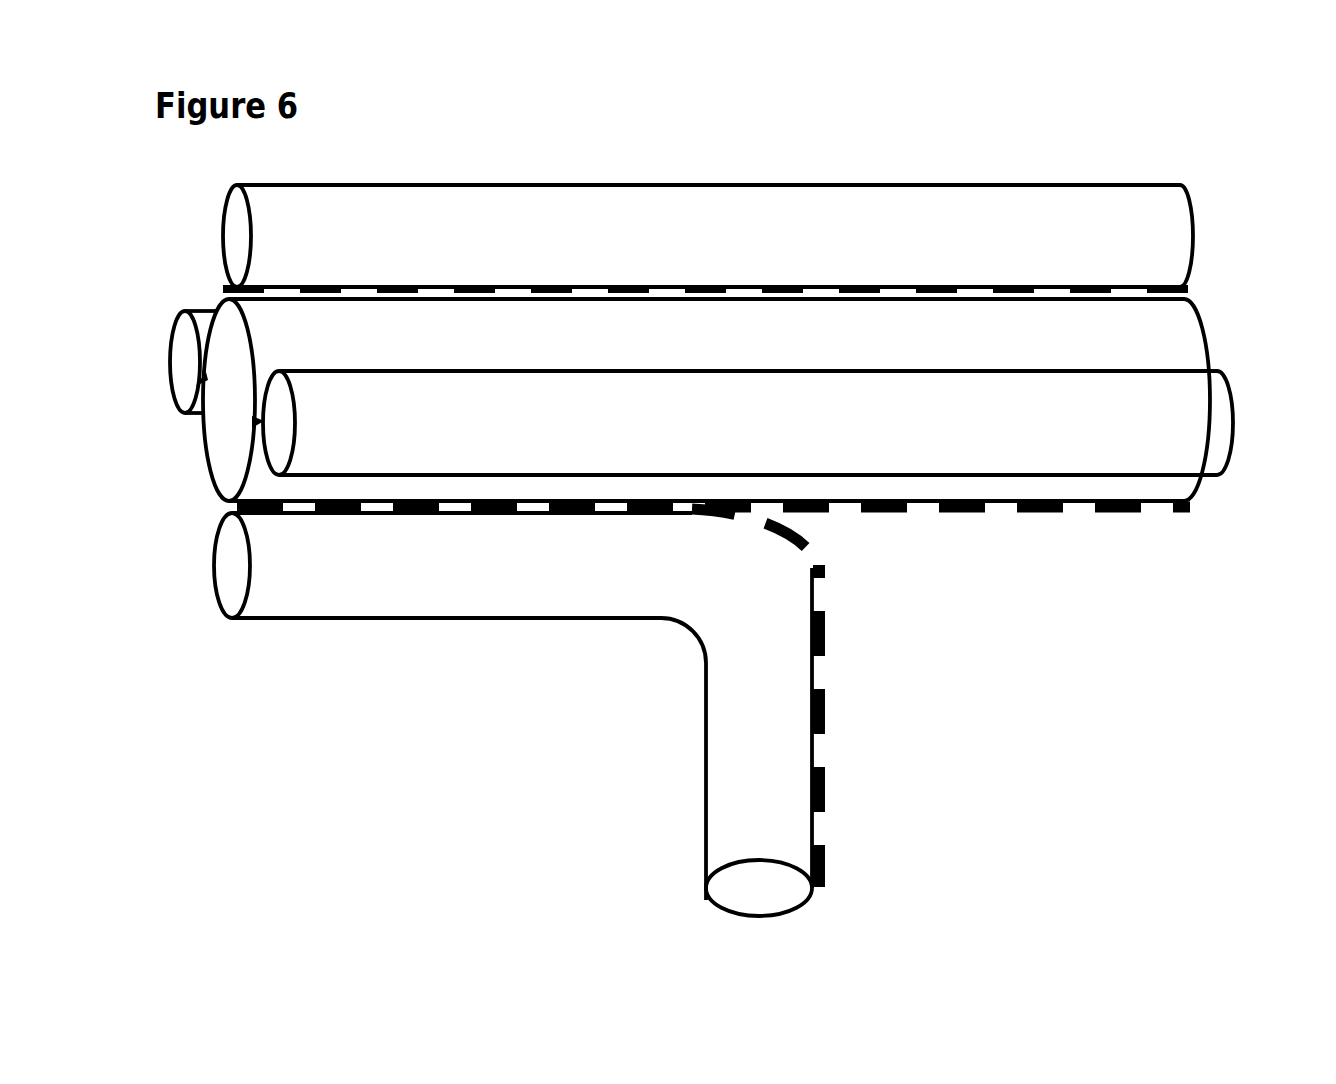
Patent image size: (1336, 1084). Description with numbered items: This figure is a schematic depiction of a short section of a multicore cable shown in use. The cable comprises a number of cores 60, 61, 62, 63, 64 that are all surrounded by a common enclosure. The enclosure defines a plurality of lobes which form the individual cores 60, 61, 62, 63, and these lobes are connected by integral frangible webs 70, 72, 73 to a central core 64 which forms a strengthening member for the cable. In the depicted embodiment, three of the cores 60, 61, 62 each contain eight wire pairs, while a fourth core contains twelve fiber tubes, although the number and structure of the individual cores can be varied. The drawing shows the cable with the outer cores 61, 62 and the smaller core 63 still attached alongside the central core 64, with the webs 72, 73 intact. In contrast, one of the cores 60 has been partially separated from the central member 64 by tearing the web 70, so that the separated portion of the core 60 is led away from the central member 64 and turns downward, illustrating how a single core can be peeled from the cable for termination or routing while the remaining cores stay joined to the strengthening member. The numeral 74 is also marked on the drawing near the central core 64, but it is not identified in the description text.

The core 60 is at (513, 714).
The core 61 is at (767, 423).
The core 62 is at (727, 236).
The core 63 is at (176, 362).
The central core 64 is at (694, 403).
The frangible web 70 is at (774, 698).
The frangible web 72 is at (727, 287).
The frangible web 73 is at (218, 369).
The flow arrow 74 is at (240, 418).